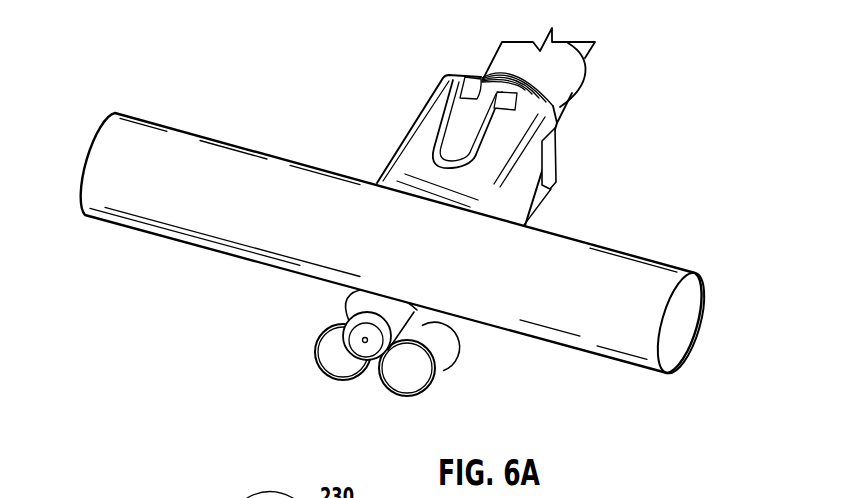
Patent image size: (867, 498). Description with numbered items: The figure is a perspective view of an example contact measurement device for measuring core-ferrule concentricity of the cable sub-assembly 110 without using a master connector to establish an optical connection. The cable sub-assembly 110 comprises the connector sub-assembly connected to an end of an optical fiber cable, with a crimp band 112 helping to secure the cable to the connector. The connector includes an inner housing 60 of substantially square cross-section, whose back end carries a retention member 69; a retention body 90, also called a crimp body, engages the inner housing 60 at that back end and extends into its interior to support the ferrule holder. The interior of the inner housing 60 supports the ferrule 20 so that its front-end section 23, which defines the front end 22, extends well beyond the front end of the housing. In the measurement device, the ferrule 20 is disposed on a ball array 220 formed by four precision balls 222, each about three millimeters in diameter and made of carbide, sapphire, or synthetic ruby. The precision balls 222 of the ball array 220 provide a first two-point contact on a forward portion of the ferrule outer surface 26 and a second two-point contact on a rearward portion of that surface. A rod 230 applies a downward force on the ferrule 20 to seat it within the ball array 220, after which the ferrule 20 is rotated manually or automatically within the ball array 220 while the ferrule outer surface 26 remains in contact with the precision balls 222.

The cable sub-assembly 110 is at (401, 231).
The inner housing 60 is at (428, 132).
The retention body 90 is at (502, 78).
The crimp band 112 is at (550, 74).
The retention member 69 is at (547, 160).
The rod 230 is at (597, 268).
The ferrule 20 is at (361, 363).
The front end 22 is at (350, 339).
The ferrule outer surface 26 is at (340, 302).
The front-end section 23 is at (458, 363).
The ball array 220 is at (315, 386).
The precision balls 222 is at (407, 387).